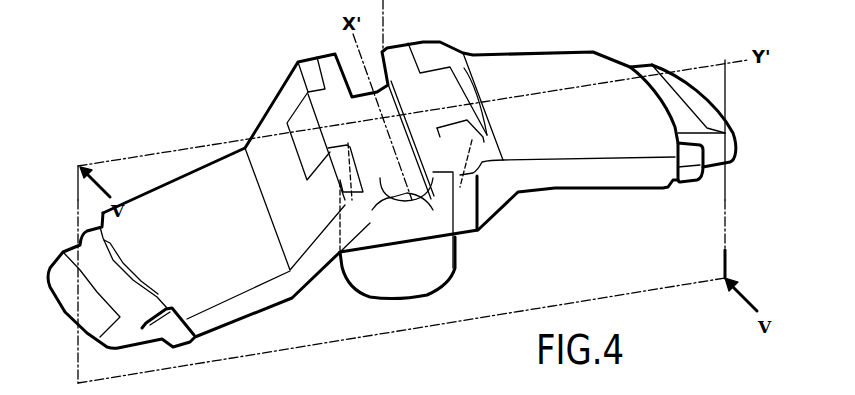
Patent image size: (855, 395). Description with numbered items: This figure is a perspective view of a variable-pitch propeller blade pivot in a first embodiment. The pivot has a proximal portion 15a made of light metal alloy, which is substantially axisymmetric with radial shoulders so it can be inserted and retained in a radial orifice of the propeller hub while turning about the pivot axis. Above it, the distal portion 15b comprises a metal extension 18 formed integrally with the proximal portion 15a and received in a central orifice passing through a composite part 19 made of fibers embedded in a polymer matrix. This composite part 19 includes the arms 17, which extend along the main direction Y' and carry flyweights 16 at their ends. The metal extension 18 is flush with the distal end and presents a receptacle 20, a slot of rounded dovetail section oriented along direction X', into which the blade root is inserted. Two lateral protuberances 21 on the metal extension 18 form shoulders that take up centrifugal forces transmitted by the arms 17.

The proximal portion 15a is at (397, 293).
The distal portion 15b is at (440, 43).
The flyweights 16 is at (70, 296).
The arms 17 is at (222, 279).
The metal extension 18 is at (339, 255).
The composite part 19 is at (265, 114).
The receptacle 20 is at (407, 213).
The lateral protuberances 21 is at (327, 183).